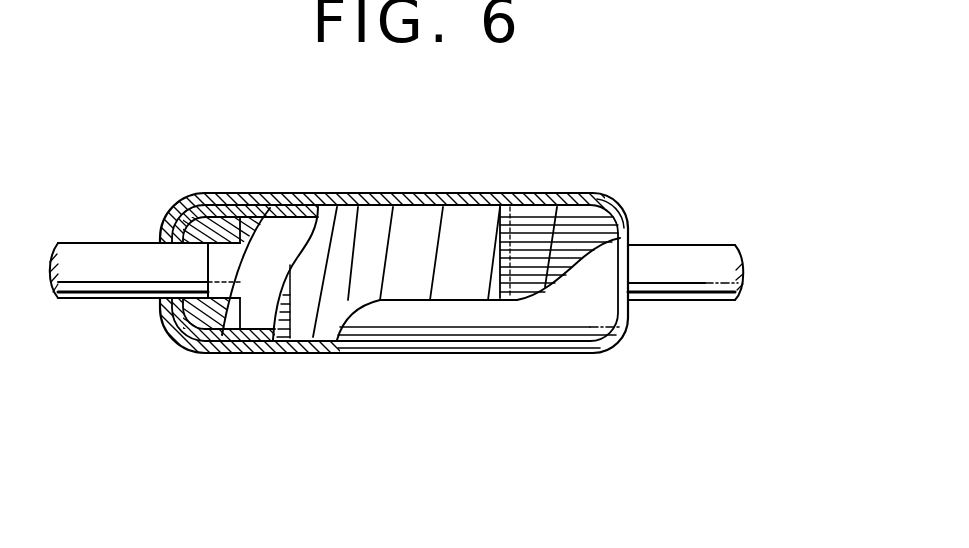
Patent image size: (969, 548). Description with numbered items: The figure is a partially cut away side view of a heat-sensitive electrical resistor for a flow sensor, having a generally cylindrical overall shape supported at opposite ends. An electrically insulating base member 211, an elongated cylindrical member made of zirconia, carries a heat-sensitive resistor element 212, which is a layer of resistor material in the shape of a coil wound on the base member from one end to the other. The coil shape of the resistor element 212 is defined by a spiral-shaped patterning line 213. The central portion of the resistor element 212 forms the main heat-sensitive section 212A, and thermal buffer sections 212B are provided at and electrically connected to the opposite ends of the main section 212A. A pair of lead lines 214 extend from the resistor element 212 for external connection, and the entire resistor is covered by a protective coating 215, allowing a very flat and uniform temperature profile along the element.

The base member 211 is at (203, 193).
The heat-sensitive resistor element 212 is at (243, 193).
The main heat-sensitive section 212A is at (403, 290).
The thermal buffer sections 212B is at (283, 330).
The spiral-shaped patterning line 213 is at (340, 242).
The lead lines 214 is at (98, 284).
The protective coating 215 is at (300, 193).